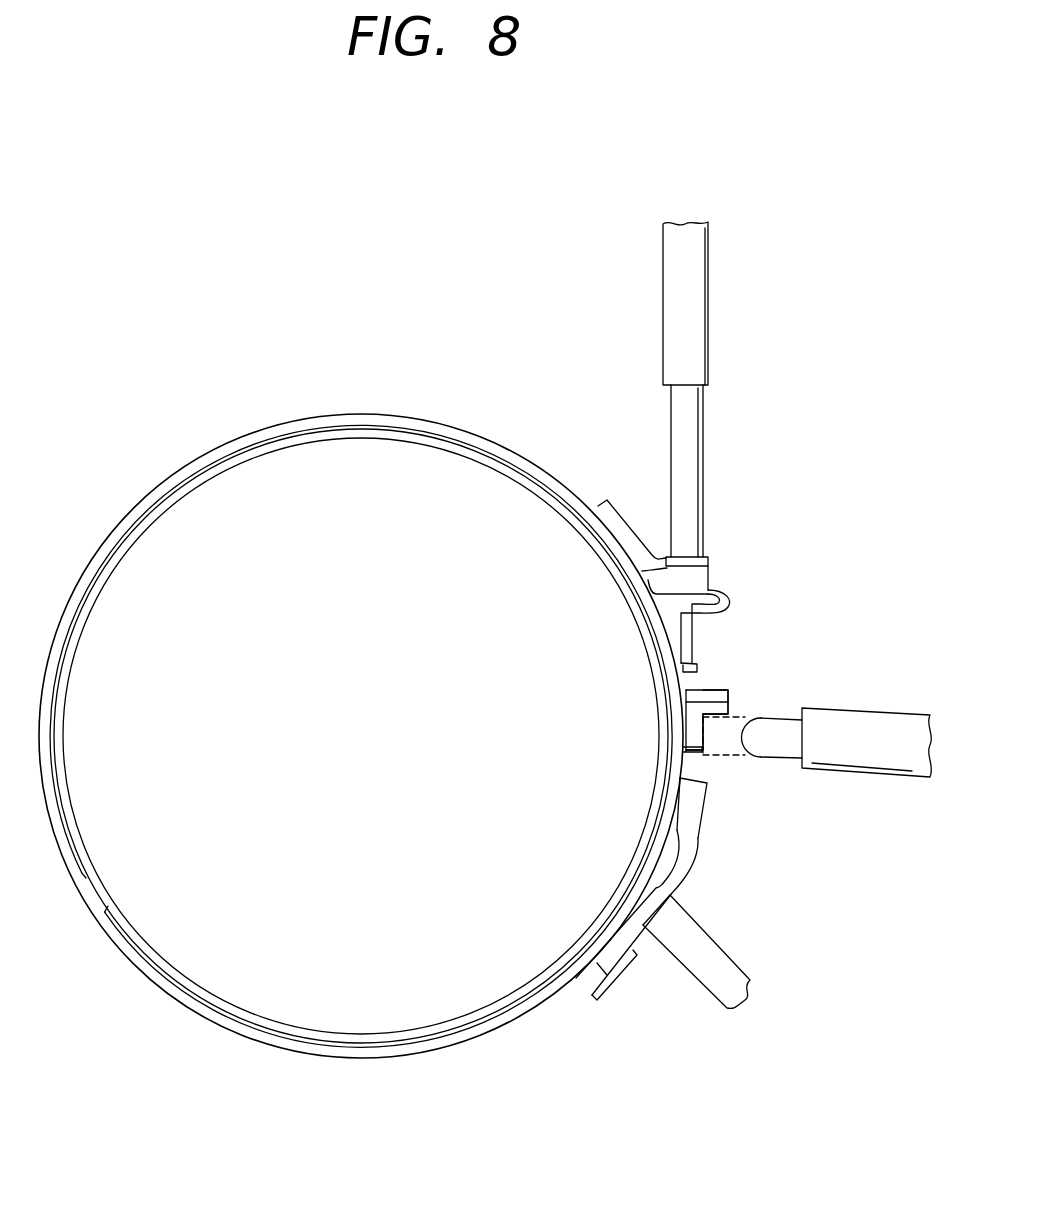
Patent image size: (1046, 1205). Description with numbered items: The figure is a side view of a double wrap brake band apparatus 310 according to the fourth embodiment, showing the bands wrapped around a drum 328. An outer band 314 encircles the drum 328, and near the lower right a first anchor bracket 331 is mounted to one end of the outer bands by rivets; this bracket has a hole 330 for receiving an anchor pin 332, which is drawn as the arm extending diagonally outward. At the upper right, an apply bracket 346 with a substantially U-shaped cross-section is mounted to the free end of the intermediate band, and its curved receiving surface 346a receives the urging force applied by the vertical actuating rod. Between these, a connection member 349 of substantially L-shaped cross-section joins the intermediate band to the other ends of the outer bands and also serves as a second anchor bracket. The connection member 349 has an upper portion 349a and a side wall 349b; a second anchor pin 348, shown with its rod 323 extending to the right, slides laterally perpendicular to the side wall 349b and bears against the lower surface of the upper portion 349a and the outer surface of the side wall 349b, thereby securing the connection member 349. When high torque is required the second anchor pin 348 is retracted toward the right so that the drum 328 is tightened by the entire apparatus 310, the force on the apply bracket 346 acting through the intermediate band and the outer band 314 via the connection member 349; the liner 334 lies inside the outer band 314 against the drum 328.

The double wrap brake band apparatus 310 is at (361, 645).
The outer band 314 is at (447, 428).
The drum 328 is at (392, 982).
The liner 334 is at (232, 1023).
The curved receiving surface 346a is at (688, 556).
The apply bracket 346 is at (726, 590).
The connection member 349 is at (700, 688).
The upper portion 349a is at (732, 690).
The side wall 349b is at (705, 762).
The second anchor pin 348 is at (775, 718).
The rod 323 is at (880, 712).
The first anchor bracket 331 is at (703, 818).
The hole 330 is at (690, 887).
The anchor pin 332 is at (673, 960).